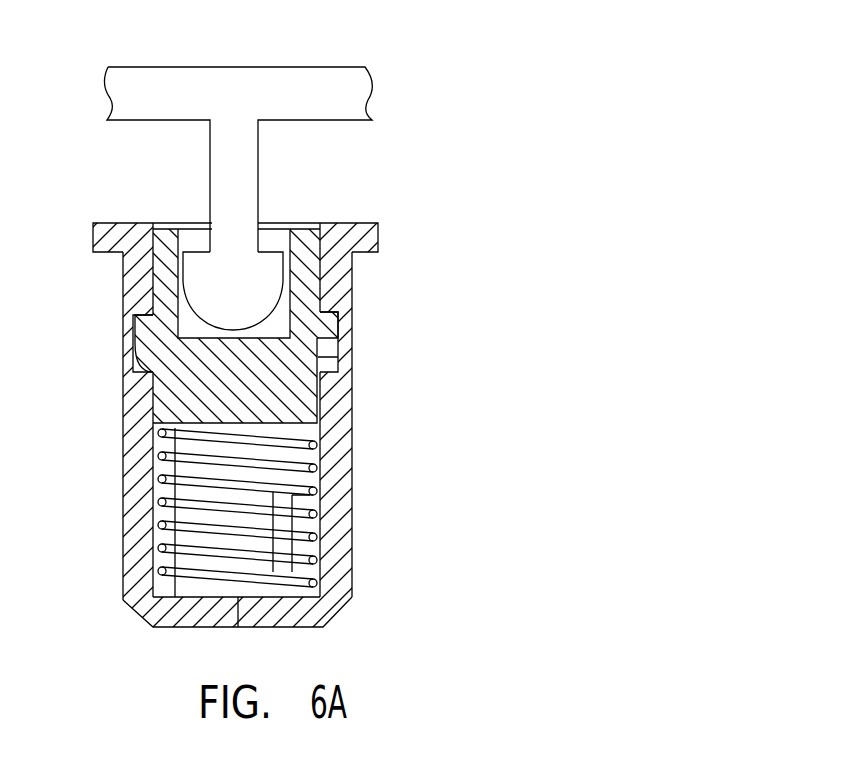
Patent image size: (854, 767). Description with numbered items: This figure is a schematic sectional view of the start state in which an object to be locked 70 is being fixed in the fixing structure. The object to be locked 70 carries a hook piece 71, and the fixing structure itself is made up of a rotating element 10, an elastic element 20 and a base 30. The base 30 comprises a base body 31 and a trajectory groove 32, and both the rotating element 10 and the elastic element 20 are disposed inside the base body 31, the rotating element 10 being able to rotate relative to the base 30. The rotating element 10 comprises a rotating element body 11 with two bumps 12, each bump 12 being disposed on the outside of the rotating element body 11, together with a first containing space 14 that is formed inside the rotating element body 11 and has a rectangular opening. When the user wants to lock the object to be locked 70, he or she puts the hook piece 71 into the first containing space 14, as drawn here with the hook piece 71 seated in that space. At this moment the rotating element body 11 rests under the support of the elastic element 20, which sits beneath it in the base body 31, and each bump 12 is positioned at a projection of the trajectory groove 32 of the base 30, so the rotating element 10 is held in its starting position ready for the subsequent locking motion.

The object to be locked 70 is at (280, 169).
The hook piece 71 is at (205, 268).
The first containing space 14 is at (287, 217).
The rotating element 10 is at (245, 307).
The rotating element body 11 is at (282, 385).
The bump 12 is at (155, 327).
The base 30 is at (214, 425).
The base body 31 is at (337, 532).
The trajectory groove 32 is at (133, 360).
The elastic element 20 is at (160, 548).